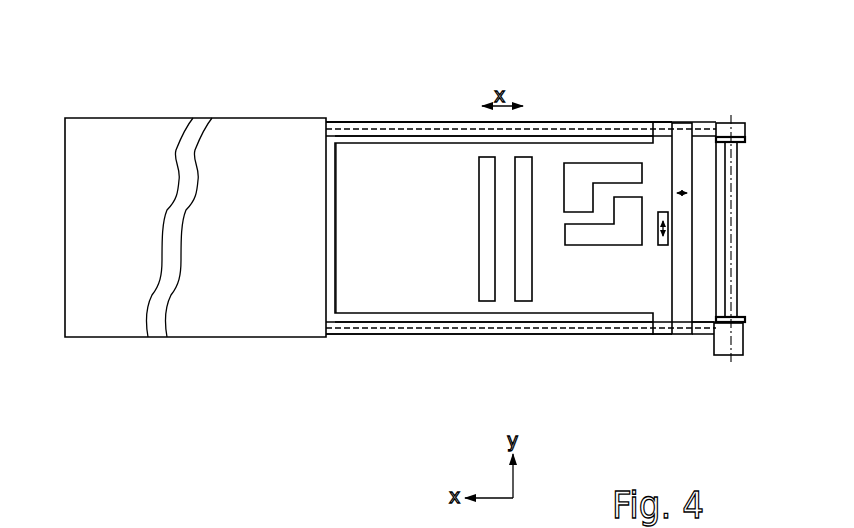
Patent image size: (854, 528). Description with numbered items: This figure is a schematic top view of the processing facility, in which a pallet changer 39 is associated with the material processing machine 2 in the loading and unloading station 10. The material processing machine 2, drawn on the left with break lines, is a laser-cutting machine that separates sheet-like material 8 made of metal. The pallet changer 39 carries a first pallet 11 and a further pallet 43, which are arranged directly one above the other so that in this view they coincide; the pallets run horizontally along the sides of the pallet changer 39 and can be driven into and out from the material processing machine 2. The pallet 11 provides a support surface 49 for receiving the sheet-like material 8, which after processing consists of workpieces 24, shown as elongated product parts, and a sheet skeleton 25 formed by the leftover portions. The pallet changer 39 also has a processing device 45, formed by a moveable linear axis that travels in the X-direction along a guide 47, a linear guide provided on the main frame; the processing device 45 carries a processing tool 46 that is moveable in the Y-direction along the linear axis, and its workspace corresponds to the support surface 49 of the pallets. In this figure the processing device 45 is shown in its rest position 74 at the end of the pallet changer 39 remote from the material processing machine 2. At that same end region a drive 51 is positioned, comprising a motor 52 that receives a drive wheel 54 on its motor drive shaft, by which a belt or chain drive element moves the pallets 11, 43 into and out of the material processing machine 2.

The material processing machine 2 is at (250, 100).
The loading and unloading station 10 is at (610, 84).
The guide 47 is at (382, 128).
The support surface 49 is at (443, 140).
The first pallet 11 is at (543, 122).
The further pallet 43 is at (499, 85).
The sheet skeleton 25 is at (562, 297).
The workpieces 24 is at (523, 294).
The sheet-like material 8 is at (605, 330).
The processing tool 46 is at (663, 248).
The processing device 45 is at (686, 103).
The rest position 74 is at (705, 112).
The pallet changer 39 is at (741, 256).
The drive wheel 54 is at (740, 315).
The motor 52 is at (727, 350).
The drive 51 is at (702, 346).